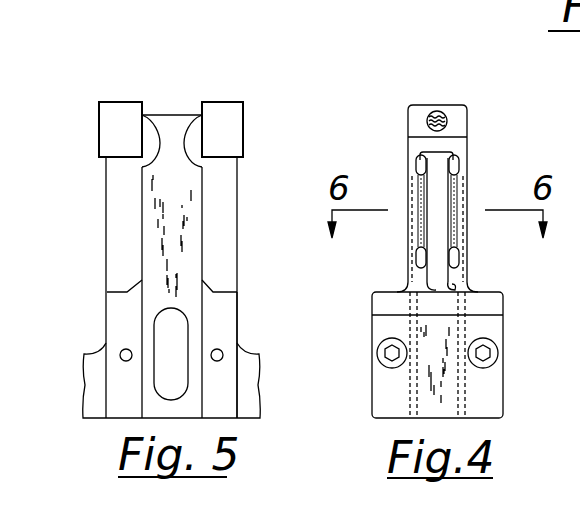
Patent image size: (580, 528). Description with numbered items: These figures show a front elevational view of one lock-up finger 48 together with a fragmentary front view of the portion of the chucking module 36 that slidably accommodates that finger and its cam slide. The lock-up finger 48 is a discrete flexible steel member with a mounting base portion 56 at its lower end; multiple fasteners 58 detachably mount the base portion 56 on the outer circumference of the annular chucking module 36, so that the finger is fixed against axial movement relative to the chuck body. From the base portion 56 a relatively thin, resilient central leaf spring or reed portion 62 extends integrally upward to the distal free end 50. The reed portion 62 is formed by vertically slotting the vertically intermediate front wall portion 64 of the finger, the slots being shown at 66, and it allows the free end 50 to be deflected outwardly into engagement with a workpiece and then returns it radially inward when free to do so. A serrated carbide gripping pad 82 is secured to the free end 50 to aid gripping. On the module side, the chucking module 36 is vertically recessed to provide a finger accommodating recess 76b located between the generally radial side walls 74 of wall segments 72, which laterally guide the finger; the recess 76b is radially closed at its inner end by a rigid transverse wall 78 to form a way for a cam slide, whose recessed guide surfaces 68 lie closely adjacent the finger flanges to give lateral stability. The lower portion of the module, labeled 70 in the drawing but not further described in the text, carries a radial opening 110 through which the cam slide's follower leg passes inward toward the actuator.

In FIG. 5, the chucking module 36 is at (248, 378).
In FIG. 4, the lock-up finger 48 is at (364, 309).
In FIG. 4, the free end 50 is at (468, 122).
In FIG. 4, the mounting base portion 56 is at (495, 400).
In FIG. 4, the fasteners 58 is at (380, 362).
In FIG. 4, the reed portion 62 is at (440, 205).
In FIG. 4, the front wall portion 64 is at (413, 240).
In FIG. 4, the slots 66 is at (418, 193).
In FIG. 4, the recessed guide surfaces 68 is at (460, 290).
In FIG. 5, the lower flange 70 is at (122, 385).
In FIG. 5, the wall segments 72 is at (110, 215).
In FIG. 5, the radial side walls 74 is at (160, 133).
In FIG. 5, the finger accommodating recess 76b is at (170, 125).
In FIG. 5, the transverse wall 78 is at (182, 114).
In FIG. 4, the gripping pad 82 is at (440, 112).
In FIG. 5, the radial opening 110 is at (152, 342).